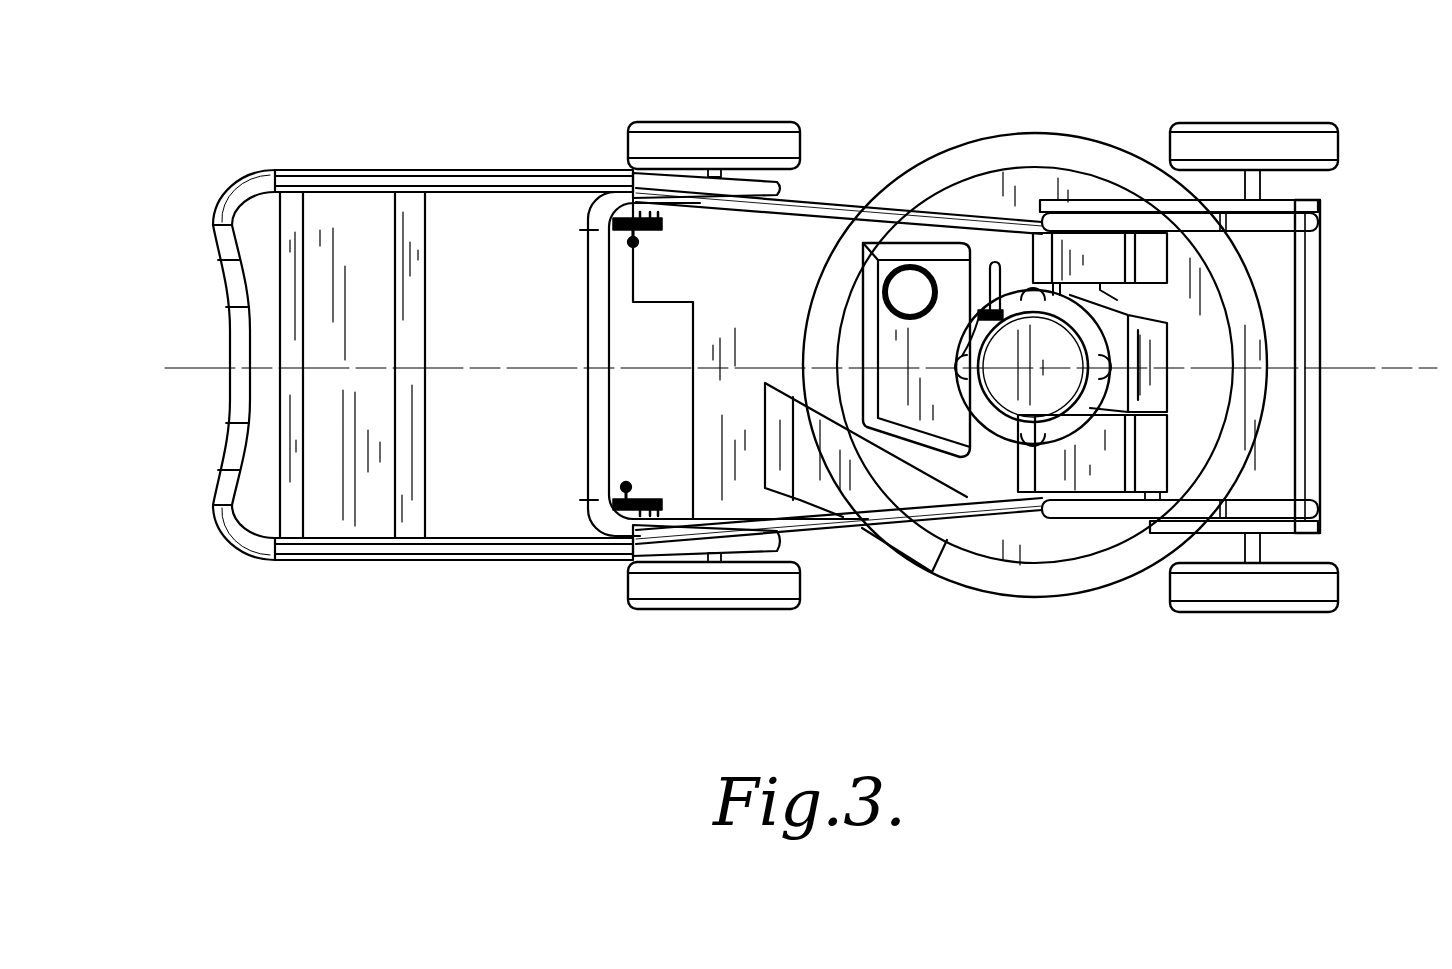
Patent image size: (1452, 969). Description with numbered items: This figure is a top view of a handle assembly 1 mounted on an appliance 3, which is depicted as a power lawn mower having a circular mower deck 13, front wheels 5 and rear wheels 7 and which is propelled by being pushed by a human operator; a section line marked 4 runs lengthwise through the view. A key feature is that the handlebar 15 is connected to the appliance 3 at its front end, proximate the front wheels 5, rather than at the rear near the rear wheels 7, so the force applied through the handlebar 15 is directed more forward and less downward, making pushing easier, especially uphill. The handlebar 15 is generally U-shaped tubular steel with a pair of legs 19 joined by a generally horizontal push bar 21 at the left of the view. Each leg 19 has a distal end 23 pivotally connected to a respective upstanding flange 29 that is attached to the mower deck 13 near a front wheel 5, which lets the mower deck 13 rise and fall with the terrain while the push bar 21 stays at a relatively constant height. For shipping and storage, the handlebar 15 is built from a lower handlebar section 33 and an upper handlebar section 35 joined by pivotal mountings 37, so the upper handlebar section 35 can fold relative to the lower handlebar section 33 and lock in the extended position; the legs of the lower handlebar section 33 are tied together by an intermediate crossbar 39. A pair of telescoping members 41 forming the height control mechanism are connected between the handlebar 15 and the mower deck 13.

The handle assembly 1 is at (384, 370).
The appliance 3 is at (997, 398).
The section line 4- 4 is at (168, 368).
The front wheel 5 is at (1285, 120).
The rear wheel 7 is at (760, 122).
The mower deck 13 is at (1043, 593).
The handlebar 15 is at (384, 370).
The legs 19 is at (533, 182).
The push bar 21 is at (235, 407).
The distal end 23 is at (1318, 224).
The upstanding flange 29 is at (1320, 203).
The lower handlebar section 33 is at (835, 193).
The upper handlebar section 35 is at (285, 162).
The pivotal mountings 37 is at (680, 170).
The intermediate crossbar 39 is at (674, 358).
The telescoping members 41 is at (650, 233).